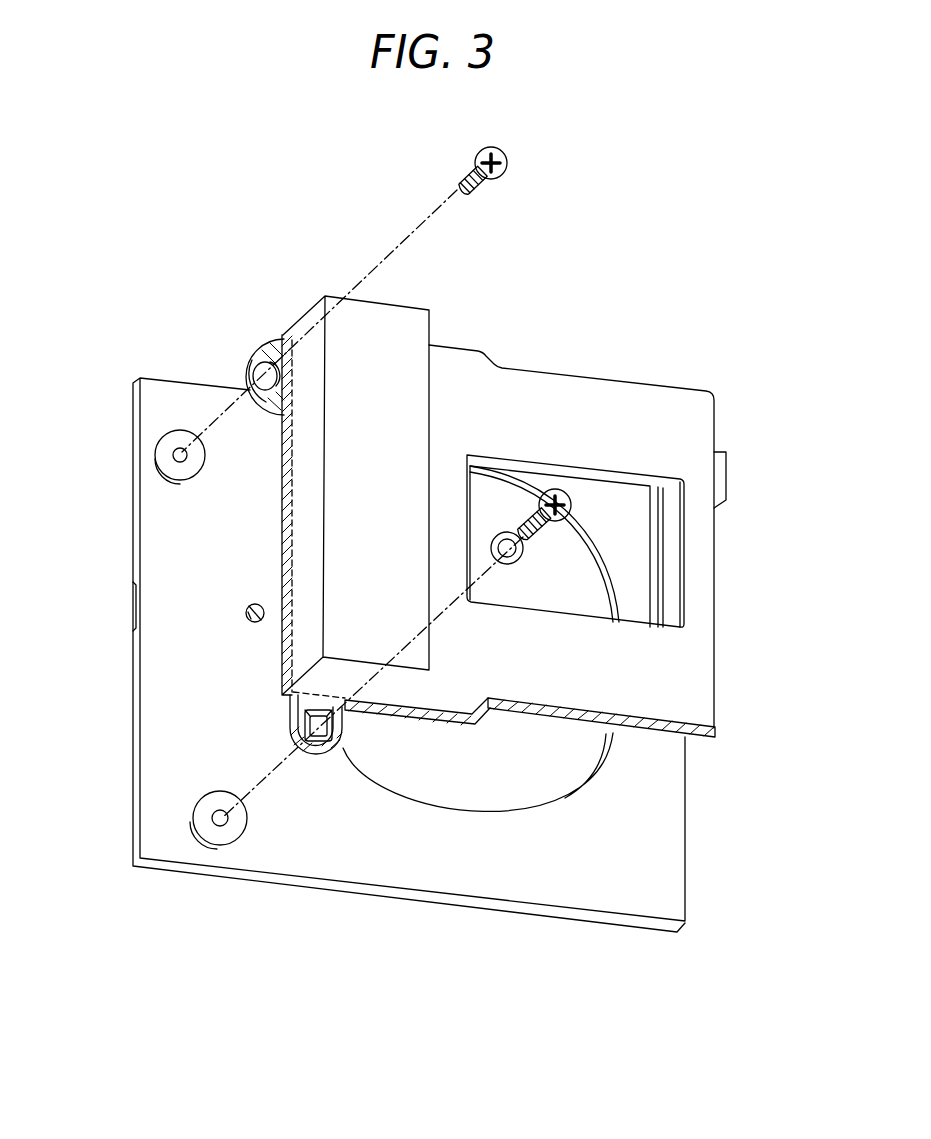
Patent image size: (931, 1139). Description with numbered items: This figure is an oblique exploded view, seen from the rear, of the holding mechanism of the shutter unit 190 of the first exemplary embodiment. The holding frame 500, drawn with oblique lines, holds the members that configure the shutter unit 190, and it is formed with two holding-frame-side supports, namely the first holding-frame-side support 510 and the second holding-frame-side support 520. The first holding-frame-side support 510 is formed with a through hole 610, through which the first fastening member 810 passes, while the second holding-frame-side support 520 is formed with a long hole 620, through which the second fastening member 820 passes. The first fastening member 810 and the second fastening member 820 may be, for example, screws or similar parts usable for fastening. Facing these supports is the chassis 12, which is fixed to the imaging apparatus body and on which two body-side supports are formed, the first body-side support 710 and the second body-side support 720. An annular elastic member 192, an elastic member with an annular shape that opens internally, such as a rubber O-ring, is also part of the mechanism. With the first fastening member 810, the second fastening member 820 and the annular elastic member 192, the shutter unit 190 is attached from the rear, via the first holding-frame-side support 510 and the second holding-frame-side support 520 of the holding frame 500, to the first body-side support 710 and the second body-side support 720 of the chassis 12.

The chassis 12 is at (173, 628).
The shutter unit 190 is at (677, 403).
The annular elastic member 192 is at (512, 556).
The holding frame 500 is at (417, 713).
The first holding-frame-side support 510 is at (332, 747).
The second holding-frame-side support 520 is at (250, 365).
The through hole 610 is at (317, 740).
The long hole 620 is at (256, 357).
The first body-side support 710 is at (218, 838).
The second body-side support 720 is at (165, 452).
The first fastening member 810 is at (567, 503).
The second fastening member 820 is at (502, 158).